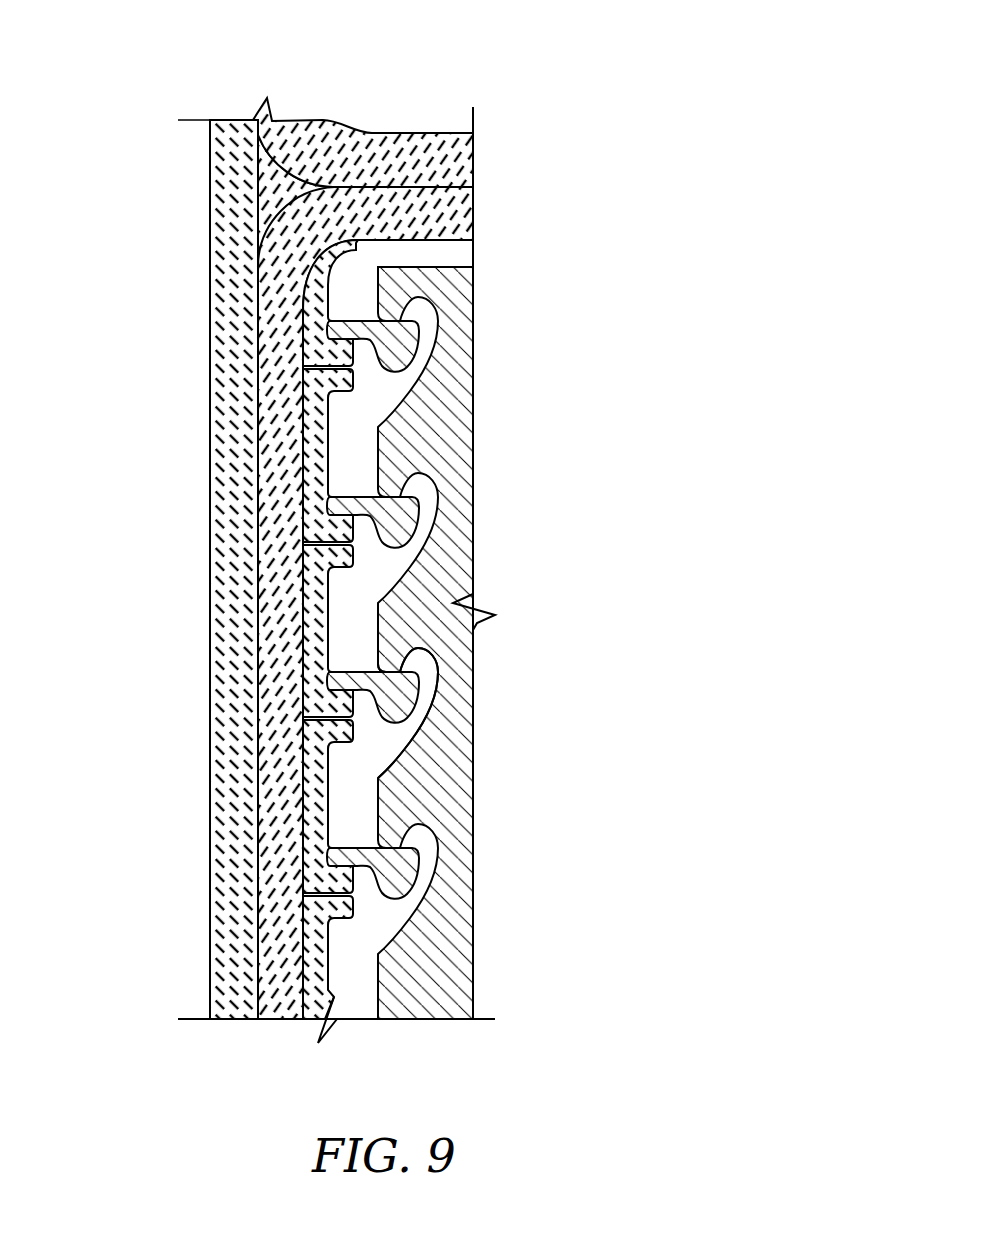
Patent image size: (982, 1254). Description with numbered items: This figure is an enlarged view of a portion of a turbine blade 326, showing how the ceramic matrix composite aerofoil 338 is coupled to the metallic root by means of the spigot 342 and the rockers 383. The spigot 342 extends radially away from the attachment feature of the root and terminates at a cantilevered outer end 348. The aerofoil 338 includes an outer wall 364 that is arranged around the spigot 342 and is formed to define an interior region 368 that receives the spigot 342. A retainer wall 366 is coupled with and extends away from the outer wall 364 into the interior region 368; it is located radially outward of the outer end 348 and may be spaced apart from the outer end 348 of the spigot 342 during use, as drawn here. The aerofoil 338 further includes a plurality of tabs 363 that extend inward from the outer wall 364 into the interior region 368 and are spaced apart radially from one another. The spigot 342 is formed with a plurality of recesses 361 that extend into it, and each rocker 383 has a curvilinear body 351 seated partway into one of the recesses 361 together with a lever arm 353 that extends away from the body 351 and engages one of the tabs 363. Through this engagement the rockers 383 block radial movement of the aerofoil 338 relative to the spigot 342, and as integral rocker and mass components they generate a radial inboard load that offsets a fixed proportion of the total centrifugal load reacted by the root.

The blade 326 is at (437, 556).
The aerofoil 338 is at (260, 569).
The spigot 342 is at (497, 479).
The outer end 348 is at (497, 274).
The body 351 is at (408, 744).
The lever arm 353 is at (369, 647).
The recesses 361 is at (428, 671).
The tabs 363 is at (332, 760).
The outer wall 364 is at (183, 601).
The retainer wall 366 is at (442, 104).
The interior region 368 is at (357, 1005).
The rockers 383 is at (394, 923).